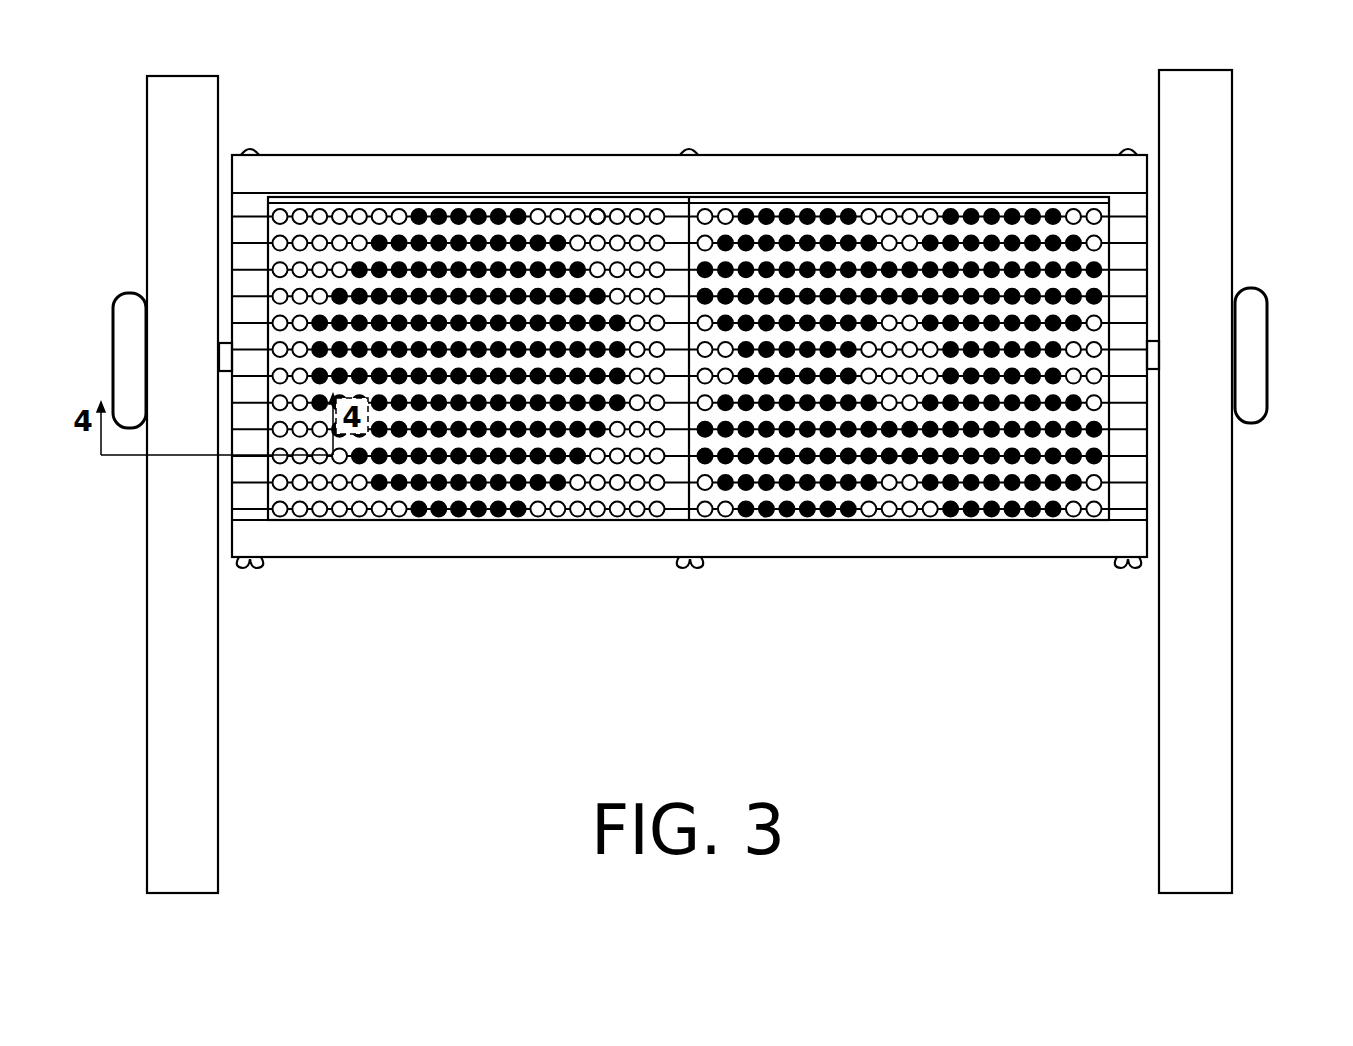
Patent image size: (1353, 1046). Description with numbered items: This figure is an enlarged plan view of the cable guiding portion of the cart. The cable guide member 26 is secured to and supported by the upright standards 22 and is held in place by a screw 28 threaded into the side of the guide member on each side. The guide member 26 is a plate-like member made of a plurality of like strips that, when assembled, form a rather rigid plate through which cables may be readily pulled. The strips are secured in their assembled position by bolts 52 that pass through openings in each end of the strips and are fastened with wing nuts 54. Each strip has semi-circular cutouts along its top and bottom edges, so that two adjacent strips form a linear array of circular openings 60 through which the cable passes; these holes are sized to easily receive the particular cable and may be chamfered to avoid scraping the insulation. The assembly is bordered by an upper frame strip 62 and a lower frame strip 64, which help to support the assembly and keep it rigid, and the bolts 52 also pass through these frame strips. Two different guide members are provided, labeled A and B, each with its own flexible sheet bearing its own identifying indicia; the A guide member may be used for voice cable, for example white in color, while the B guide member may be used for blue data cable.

The upright standards 22 is at (150, 565).
The cable guide member 26 is at (360, 603).
The screw 28 is at (113, 365).
The bolts 52 is at (253, 146).
The wing nuts 54 is at (252, 570).
The circular openings 60 is at (598, 209).
The upper frame strip 62 is at (865, 178).
The lower frame strip 64 is at (860, 558).
The A guide member A is at (485, 563).
The B guide member B is at (943, 563).